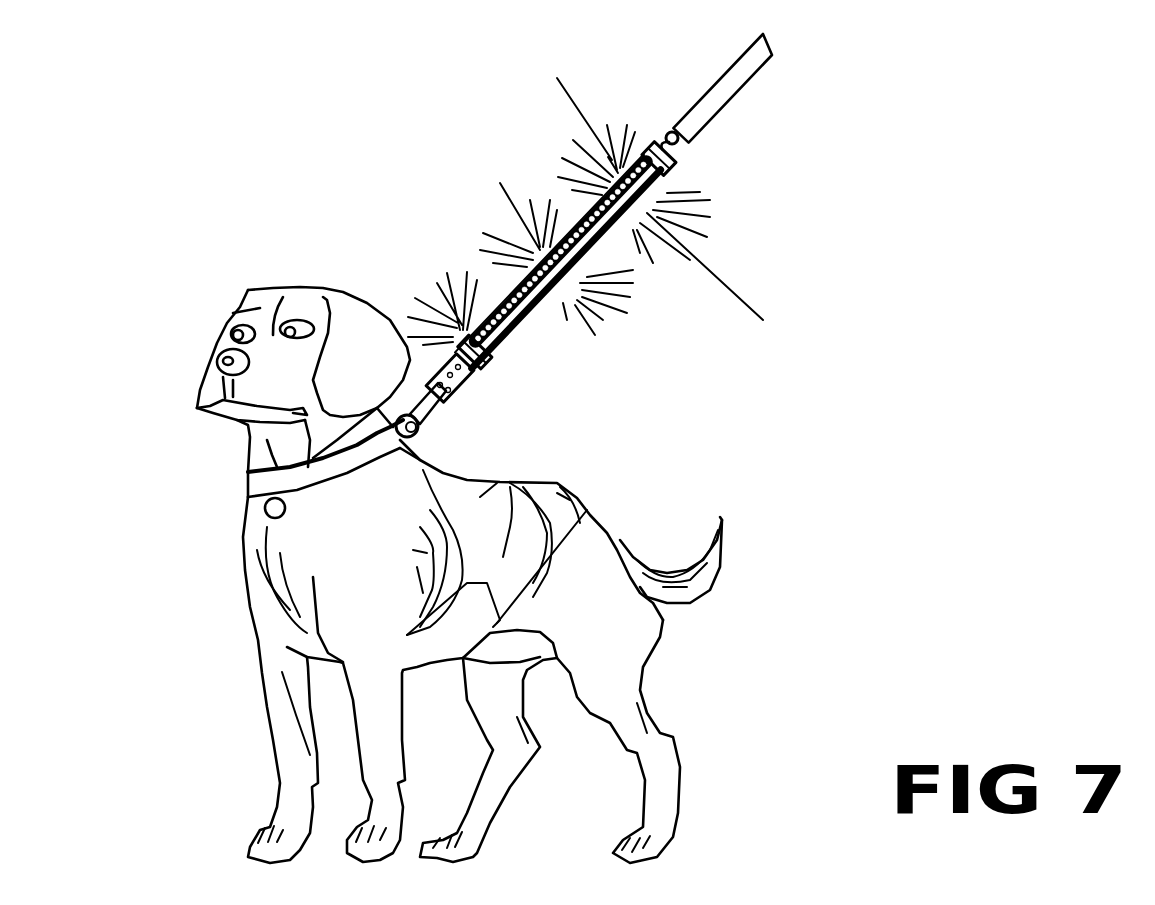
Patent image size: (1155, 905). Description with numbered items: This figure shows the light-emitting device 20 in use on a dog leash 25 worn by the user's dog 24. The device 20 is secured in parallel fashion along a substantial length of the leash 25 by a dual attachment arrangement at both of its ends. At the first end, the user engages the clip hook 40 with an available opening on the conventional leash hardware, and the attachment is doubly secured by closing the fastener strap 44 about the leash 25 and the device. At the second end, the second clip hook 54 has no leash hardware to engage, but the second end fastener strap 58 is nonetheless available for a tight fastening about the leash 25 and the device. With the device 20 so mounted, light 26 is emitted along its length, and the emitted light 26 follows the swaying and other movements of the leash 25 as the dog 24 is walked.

The device 20 is at (549, 230).
The dog 24 is at (480, 495).
The leash 25 is at (712, 110).
The light 26 is at (462, 318).
The clip hook 40 is at (458, 393).
The fastener strap 44 is at (492, 372).
The second clip hook 54 is at (668, 132).
The second end fastener strap 58 is at (677, 180).